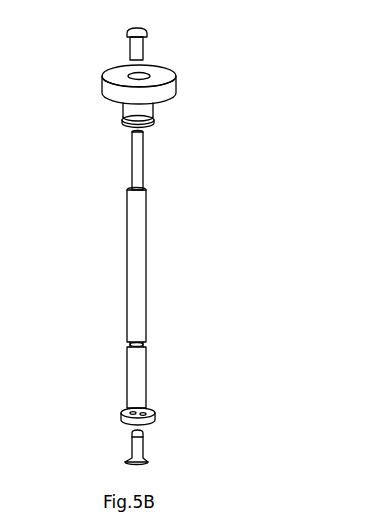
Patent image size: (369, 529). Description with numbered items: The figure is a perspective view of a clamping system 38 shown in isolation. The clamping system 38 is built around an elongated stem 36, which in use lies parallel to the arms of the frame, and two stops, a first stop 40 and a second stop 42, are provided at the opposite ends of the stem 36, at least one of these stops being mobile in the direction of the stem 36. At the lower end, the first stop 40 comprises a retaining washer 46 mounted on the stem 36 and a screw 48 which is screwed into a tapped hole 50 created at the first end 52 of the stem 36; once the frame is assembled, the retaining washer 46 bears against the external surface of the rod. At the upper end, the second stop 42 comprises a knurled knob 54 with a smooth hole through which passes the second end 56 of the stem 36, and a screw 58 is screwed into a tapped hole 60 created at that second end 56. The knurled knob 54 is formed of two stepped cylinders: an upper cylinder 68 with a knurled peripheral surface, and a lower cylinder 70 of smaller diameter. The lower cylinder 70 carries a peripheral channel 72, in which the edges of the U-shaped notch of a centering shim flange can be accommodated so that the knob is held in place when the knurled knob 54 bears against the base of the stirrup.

The screw 58 is at (138, 47).
The knurled knob 54 is at (143, 74).
The second stop 42 is at (185, 86).
The upper cylinder 68 is at (105, 88).
The lower cylinder 70 is at (128, 112).
The peripheral channel 72 is at (154, 120).
The tapped hole 60 is at (132, 132).
The second end 56 is at (132, 149).
The stem 36 is at (152, 214).
The first end 52 is at (146, 377).
The retaining washer 46 is at (148, 410).
The first stop 40 is at (165, 416).
The tapped hole 50 is at (131, 413).
The screw 48 is at (145, 448).
The clamping system 38 is at (108, 425).